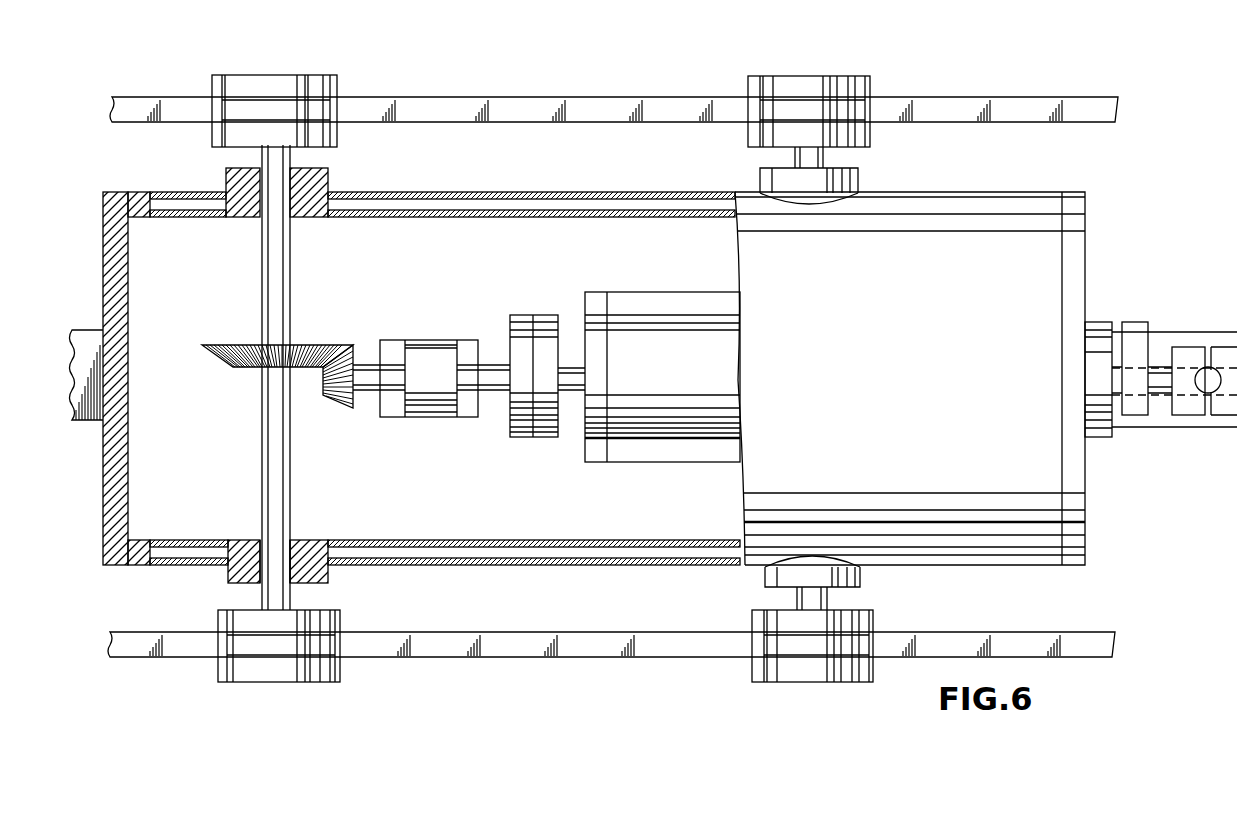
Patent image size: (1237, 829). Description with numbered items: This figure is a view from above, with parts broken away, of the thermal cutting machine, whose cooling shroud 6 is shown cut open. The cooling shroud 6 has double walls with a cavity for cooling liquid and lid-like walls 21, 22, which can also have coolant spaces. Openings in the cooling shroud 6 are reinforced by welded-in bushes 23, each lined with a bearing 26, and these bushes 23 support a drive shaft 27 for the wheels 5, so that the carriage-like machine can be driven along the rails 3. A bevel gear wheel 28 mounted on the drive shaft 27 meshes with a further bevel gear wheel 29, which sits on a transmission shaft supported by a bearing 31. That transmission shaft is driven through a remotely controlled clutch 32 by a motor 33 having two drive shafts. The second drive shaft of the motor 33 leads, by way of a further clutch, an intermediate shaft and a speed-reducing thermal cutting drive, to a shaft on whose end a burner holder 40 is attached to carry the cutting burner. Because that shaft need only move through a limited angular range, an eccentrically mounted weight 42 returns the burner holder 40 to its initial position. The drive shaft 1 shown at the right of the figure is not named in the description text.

The drive shaft 1 is at (1160, 342).
The rails 3 is at (437, 105).
The wheels 5 is at (300, 88).
The cooling shroud 6 is at (515, 200).
The lid-like wall 21 is at (122, 245).
The lid-like wall 22 is at (1077, 510).
The bushes 23 is at (320, 175).
The bearing 26 is at (296, 540).
The drive shaft 27 is at (273, 303).
The bevel gear wheel 28 is at (306, 345).
The bevel gear wheel 29 is at (355, 345).
The bearing 31 is at (436, 345).
The clutch 32 is at (521, 320).
The motor 33 is at (633, 333).
The burner holder 40 is at (1190, 352).
The weight 42 is at (1134, 332).